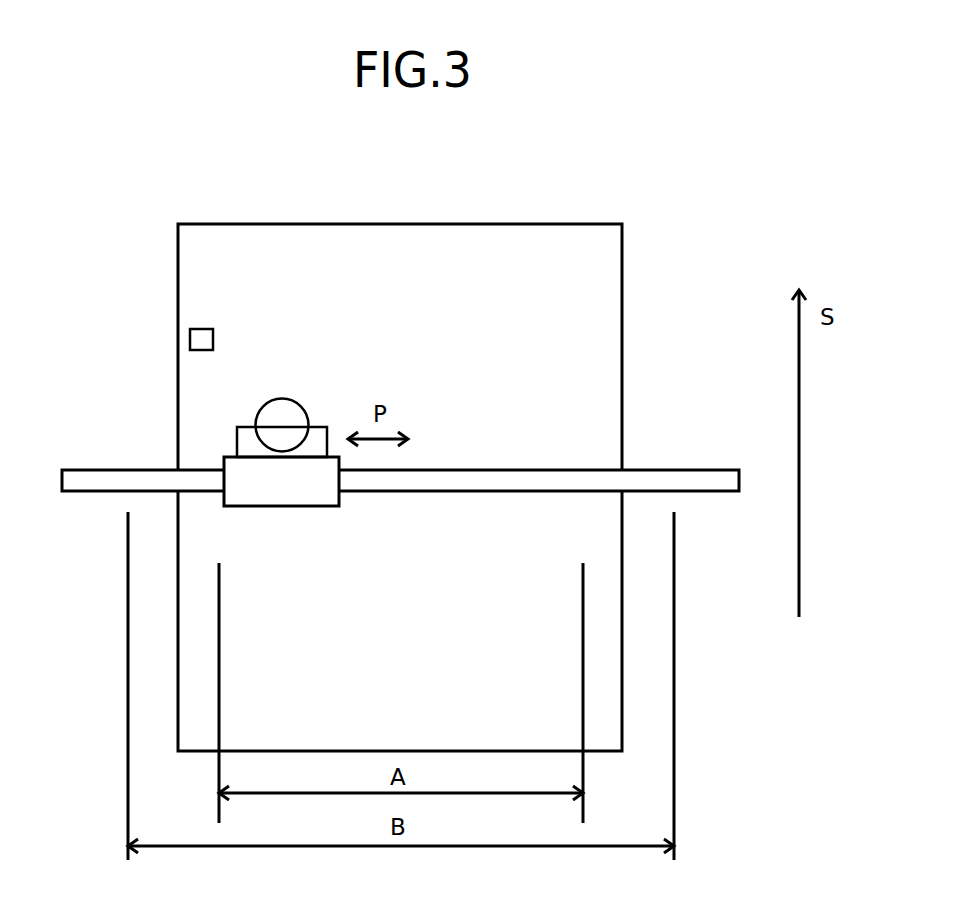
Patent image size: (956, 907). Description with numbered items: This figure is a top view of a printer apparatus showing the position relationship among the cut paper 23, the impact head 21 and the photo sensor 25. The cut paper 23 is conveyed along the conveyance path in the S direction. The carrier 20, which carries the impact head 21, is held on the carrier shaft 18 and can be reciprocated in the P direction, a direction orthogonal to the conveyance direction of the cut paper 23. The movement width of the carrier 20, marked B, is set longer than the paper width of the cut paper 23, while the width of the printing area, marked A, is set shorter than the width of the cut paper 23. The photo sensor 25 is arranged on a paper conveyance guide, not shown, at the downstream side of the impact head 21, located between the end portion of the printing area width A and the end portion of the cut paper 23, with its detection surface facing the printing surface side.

The carrier shaft 18 is at (492, 468).
The carrier 20 is at (308, 493).
The impact head 21 is at (287, 413).
The cut paper 23 is at (623, 275).
The photo sensor 25 is at (226, 331).